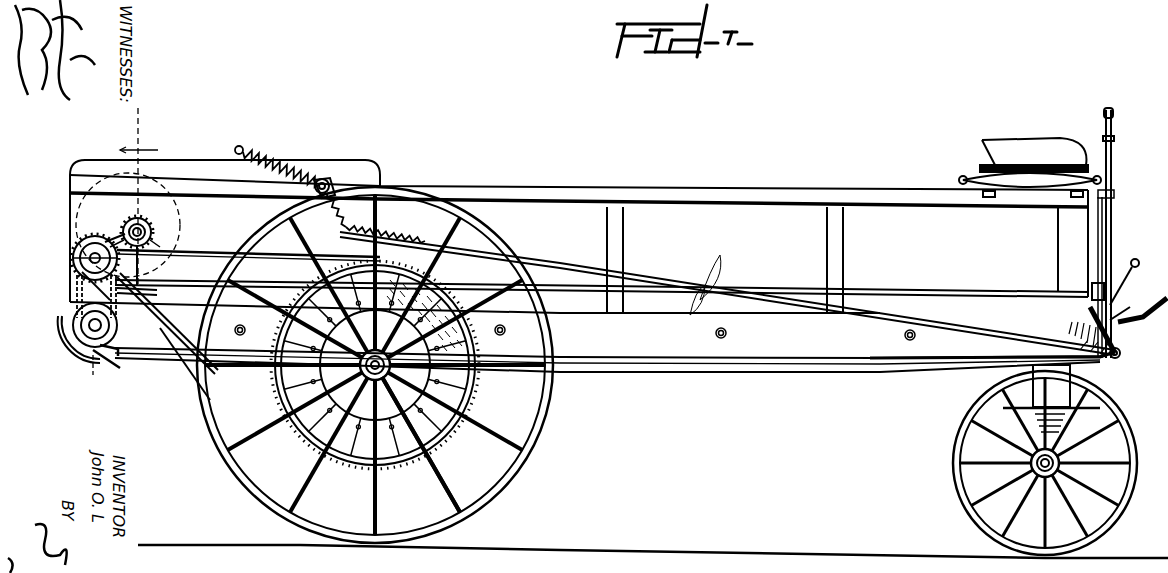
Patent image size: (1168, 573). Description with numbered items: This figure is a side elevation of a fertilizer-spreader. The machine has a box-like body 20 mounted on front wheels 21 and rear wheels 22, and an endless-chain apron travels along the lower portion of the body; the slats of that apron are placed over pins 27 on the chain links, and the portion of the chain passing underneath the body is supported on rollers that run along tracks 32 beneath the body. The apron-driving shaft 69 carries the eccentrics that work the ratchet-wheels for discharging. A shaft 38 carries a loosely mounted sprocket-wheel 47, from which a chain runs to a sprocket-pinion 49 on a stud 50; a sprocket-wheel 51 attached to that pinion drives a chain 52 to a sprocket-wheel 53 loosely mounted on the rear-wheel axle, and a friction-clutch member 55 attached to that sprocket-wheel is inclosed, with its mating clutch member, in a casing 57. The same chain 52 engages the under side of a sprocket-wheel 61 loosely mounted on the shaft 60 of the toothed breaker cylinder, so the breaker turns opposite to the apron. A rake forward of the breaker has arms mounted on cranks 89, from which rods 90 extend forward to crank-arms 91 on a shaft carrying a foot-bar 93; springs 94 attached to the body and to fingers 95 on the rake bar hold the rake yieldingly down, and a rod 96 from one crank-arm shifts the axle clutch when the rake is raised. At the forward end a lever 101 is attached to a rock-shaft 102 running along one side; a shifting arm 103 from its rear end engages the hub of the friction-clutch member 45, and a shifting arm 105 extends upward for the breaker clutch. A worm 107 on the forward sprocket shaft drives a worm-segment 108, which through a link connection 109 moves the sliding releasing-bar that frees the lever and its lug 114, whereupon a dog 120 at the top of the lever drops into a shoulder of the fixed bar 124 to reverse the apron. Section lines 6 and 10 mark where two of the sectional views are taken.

The section line 6 is at (128, 243).
The section line 10 is at (257, 360).
The box-like body 20 is at (579, 237).
The front wheels 21 is at (968, 505).
The rear wheels 22 is at (512, 488).
The pins 27 is at (200, 398).
The tracks 32 is at (818, 370).
The shaft 38 is at (86, 333).
The friction-clutch member 45 is at (77, 292).
The sprocket-wheel 47 is at (112, 362).
The sprocket-pinion 49 is at (76, 265).
The stud 50 is at (85, 256).
The sprocket-wheel 51 is at (130, 294).
The chain 52 is at (190, 360).
The sprocket-wheel 53 is at (278, 395).
The friction-clutch member 55 is at (382, 470).
The casing 57 is at (432, 442).
The shaft 60 is at (142, 230).
The sprocket-wheel 61 is at (155, 230).
The apron-driving shaft 69 is at (244, 333).
The cranks 89 is at (328, 182).
The rods 90 is at (585, 265).
The crank-arms 91 is at (1120, 335).
The foot-bar 93 is at (1139, 265).
The springs 94 is at (268, 170).
The fingers 95 is at (1124, 307).
The rod 96 is at (663, 370).
The lever 101 is at (1108, 252).
The rock-shaft 102 is at (1000, 292).
The shifting arm 103 is at (66, 313).
The shifting arm 105 is at (145, 262).
The worm 107 is at (1117, 353).
The worm-segment 108 is at (1080, 348).
The link connection 109 is at (1140, 310).
The lug 114 is at (1105, 240).
The dog 120 is at (1108, 176).
The fixed bar 124 is at (1114, 195).